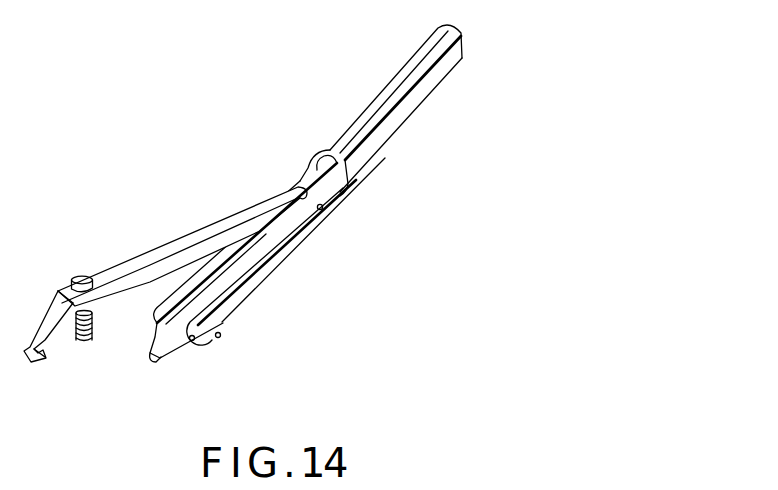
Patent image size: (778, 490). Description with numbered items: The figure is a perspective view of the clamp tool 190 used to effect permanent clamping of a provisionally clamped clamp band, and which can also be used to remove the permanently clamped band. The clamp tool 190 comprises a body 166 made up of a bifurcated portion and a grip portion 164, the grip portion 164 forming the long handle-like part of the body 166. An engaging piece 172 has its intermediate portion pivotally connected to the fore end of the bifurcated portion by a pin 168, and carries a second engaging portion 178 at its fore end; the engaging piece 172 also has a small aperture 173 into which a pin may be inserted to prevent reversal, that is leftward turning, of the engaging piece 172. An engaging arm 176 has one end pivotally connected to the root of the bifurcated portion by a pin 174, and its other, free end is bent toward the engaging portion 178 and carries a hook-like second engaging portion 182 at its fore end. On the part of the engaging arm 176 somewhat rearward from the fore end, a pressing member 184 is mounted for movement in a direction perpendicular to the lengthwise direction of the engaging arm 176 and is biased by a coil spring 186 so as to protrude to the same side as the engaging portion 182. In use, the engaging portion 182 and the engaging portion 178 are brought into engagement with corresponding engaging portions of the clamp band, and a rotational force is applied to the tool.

The grip portion 164 is at (414, 99).
The body 166 is at (329, 141).
The pin 168 is at (195, 341).
The engaging piece 172 is at (173, 348).
The small aperture 173 is at (222, 337).
The pin 174 is at (323, 210).
The engaging arm 176 is at (183, 238).
The second engaging portion 178 is at (157, 358).
The hook-like second engaging portion 182 is at (36, 363).
The pressing member 184 is at (78, 278).
The coil spring 186 is at (88, 328).
The clamp tool 190 is at (251, 178).